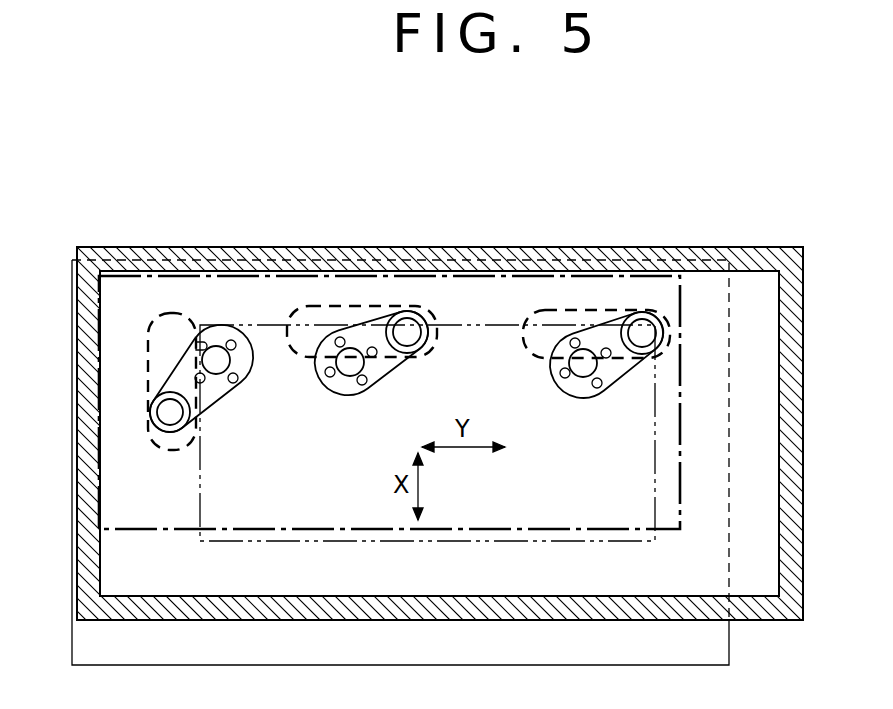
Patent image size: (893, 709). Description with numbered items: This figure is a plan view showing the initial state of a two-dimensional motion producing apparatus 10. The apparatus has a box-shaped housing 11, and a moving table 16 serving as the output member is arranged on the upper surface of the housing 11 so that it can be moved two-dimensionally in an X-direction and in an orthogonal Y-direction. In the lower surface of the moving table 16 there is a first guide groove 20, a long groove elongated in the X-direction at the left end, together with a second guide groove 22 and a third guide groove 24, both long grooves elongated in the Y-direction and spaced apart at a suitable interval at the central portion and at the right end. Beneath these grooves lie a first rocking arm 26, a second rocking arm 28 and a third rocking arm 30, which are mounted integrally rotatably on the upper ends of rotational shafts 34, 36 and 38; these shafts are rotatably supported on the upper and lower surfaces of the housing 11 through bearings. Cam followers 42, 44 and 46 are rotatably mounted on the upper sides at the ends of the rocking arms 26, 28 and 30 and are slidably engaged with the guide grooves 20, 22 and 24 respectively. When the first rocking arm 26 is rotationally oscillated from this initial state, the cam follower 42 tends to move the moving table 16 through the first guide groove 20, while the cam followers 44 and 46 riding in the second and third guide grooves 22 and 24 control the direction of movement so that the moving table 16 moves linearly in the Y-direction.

The two-dimensional motion producing apparatus 10 is at (638, 227).
The housing 11 is at (750, 247).
The moving table 16 is at (201, 290).
The first guide groove 20 is at (150, 343).
The second guide groove 22 is at (313, 313).
The third guide groove 24 is at (527, 352).
The first rocking arm 26 is at (213, 400).
The second rocking arm 28 is at (392, 367).
The third rocking arm 30 is at (617, 378).
The rotational shaft 34 is at (233, 362).
The rotational shaft 36 is at (350, 372).
The rotational shaft 38 is at (583, 368).
The cam follower 42 is at (168, 422).
The cam follower 44 is at (420, 335).
The cam follower 46 is at (650, 337).